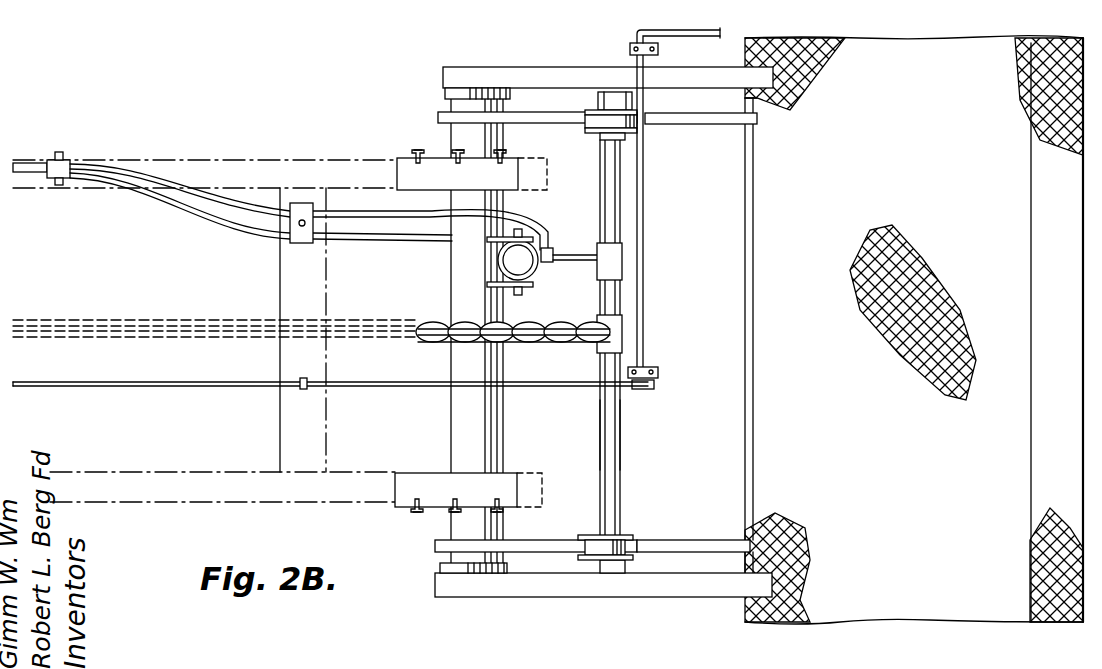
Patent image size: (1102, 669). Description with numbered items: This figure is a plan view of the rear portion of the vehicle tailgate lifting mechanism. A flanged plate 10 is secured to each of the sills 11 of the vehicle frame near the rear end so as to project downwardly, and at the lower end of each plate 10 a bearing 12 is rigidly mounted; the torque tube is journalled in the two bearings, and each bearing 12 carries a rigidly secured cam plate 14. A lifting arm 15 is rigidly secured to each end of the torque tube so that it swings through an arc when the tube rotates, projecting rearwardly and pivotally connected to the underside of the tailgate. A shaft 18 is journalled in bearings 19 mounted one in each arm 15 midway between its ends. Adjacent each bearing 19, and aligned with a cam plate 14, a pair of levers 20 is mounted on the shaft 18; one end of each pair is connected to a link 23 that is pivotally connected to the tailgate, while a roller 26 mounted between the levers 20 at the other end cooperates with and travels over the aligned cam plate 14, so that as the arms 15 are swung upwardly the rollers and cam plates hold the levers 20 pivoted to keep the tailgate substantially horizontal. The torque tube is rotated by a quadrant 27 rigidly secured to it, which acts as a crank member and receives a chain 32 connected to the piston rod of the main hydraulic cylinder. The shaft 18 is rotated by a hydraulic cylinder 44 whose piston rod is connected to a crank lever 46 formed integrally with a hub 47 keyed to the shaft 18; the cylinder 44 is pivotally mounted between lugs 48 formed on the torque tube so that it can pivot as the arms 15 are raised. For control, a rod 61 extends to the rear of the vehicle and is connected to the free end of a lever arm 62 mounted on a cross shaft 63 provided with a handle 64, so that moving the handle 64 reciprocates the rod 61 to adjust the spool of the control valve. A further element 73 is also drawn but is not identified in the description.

The flanged plate 10 is at (420, 181).
The sills 11 is at (330, 165).
The bearing 12 is at (455, 138).
The cam plate 14 is at (537, 124).
The lifting arm 15 is at (545, 70).
The shaft 18 is at (622, 468).
The bearings 19 is at (598, 98).
The levers 20 is at (588, 112).
The link 23 is at (688, 124).
The roller 26 is at (607, 100).
The quadrant 27 is at (548, 343).
The chain 32 is at (548, 323).
The hydraulic cylinder 44 is at (528, 252).
The crank lever 46 is at (566, 259).
The hub 47 is at (622, 258).
The lugs 48 is at (524, 232).
The rod 61 is at (175, 387).
The lever arm 62 is at (643, 380).
The cross shaft 63 is at (643, 242).
The handle 64 is at (690, 36).
The column 73 is at (503, 432).